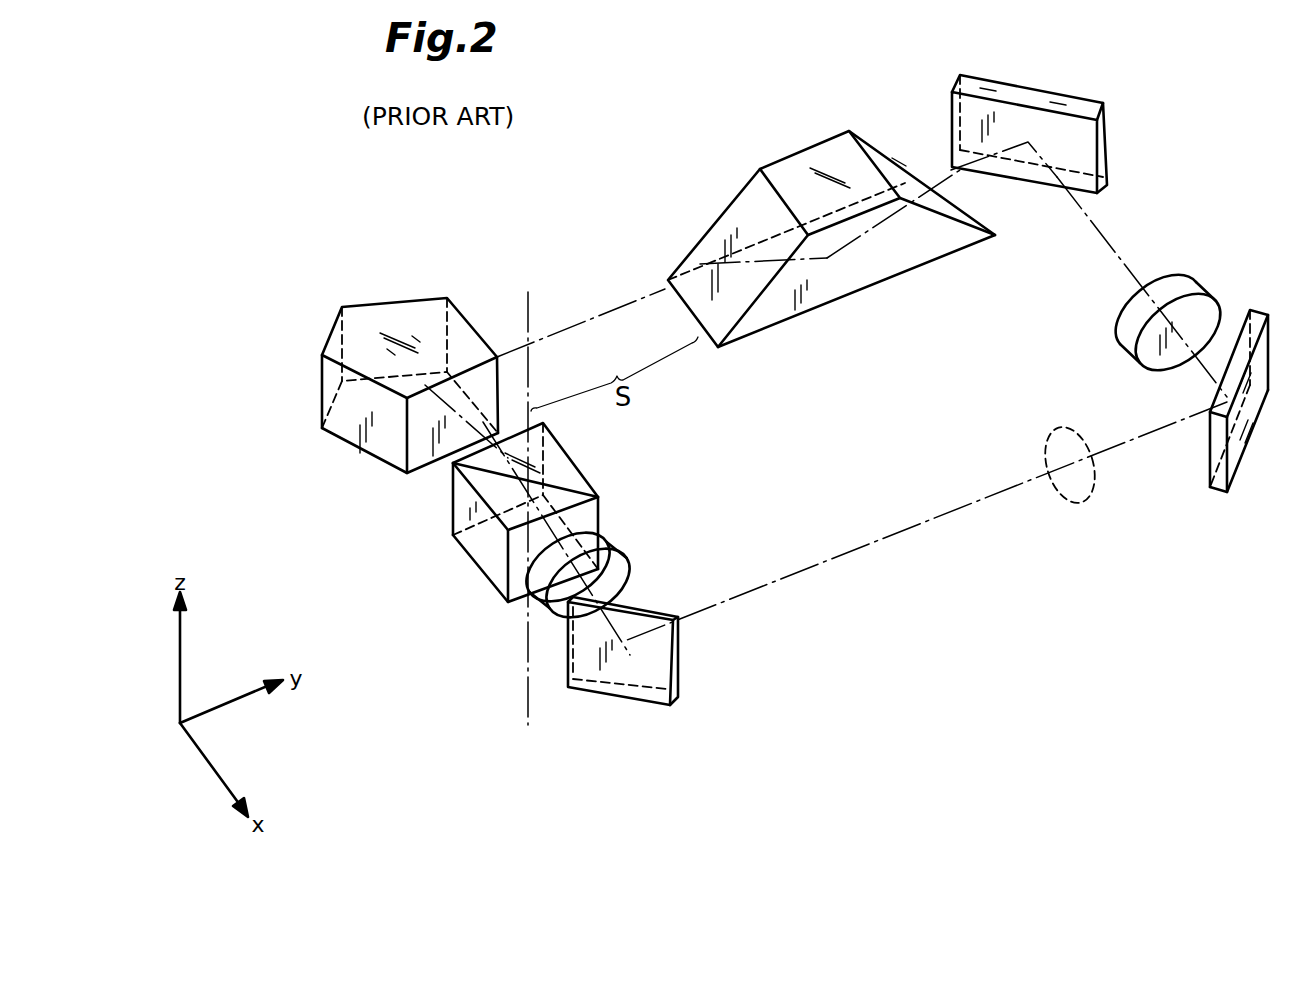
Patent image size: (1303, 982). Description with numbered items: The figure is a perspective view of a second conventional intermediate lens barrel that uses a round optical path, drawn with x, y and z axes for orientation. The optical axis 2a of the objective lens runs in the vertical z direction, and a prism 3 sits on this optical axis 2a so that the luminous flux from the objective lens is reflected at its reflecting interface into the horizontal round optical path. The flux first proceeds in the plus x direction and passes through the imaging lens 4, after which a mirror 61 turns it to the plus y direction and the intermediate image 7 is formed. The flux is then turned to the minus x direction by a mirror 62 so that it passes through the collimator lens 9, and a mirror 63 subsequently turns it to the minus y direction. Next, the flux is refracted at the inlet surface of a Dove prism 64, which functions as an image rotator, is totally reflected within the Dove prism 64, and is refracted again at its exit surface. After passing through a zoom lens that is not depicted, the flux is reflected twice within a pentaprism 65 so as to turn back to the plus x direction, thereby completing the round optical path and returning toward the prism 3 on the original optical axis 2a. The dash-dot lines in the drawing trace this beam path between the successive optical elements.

The optical axis 2a is at (522, 697).
The prism 3 is at (465, 553).
The imaging lens 4 is at (627, 565).
The intermediate image 7 is at (1093, 483).
The collimator lens 9 is at (1173, 281).
The mirror 61 is at (680, 673).
The mirror 62 is at (1205, 442).
The mirror 63 is at (1087, 153).
The Dove prism 64 is at (811, 157).
The pentaprism 65 is at (405, 298).